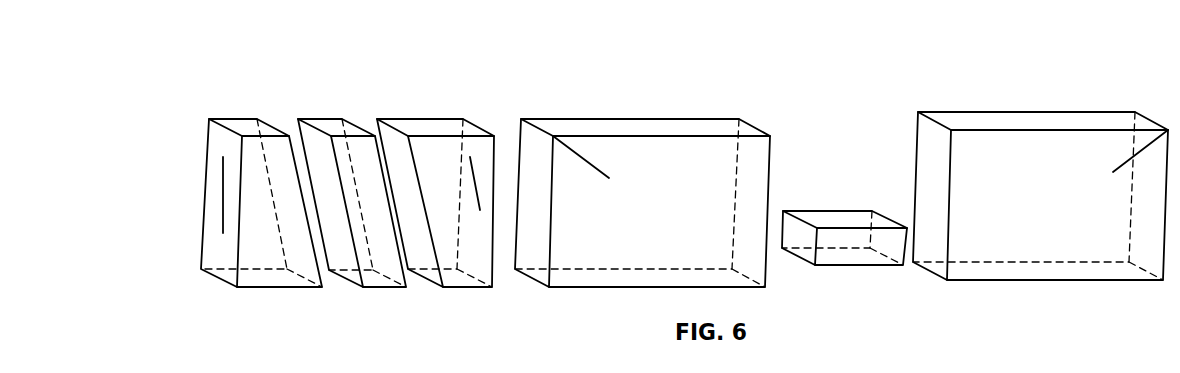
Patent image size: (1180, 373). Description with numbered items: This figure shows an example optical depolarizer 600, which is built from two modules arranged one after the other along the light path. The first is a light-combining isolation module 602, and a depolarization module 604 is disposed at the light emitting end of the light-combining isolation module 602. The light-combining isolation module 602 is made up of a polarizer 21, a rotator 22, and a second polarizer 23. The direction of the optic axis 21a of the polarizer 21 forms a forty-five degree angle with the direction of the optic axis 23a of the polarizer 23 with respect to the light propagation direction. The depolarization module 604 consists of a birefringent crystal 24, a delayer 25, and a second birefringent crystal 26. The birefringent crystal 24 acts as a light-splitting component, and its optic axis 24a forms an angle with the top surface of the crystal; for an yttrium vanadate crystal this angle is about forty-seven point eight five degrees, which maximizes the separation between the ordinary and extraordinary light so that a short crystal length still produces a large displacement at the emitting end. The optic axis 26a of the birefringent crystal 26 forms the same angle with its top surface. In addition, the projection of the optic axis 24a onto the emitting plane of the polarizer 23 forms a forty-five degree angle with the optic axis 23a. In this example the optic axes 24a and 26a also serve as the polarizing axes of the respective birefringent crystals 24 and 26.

The optical depolarizer 600 is at (228, 53).
The light-combining isolation module 602 is at (313, 62).
The depolarization module 604 is at (707, 77).
The polarizer 21 is at (242, 128).
The optic axis 21a is at (222, 193).
The rotator 22 is at (330, 126).
The polarizer 23 is at (438, 126).
The optic axis 23a is at (477, 183).
The birefringent crystal 24 is at (600, 127).
The optic axis 24a is at (603, 165).
The delayer 25 is at (852, 219).
The birefringent crystal 26 is at (1032, 122).
The optic axis 26a is at (1128, 157).